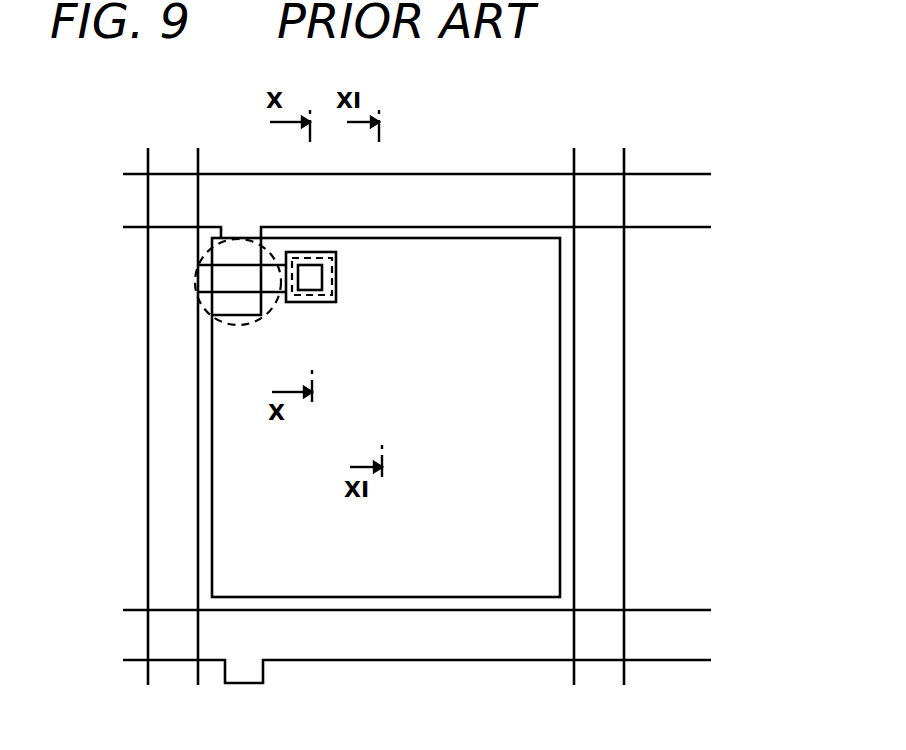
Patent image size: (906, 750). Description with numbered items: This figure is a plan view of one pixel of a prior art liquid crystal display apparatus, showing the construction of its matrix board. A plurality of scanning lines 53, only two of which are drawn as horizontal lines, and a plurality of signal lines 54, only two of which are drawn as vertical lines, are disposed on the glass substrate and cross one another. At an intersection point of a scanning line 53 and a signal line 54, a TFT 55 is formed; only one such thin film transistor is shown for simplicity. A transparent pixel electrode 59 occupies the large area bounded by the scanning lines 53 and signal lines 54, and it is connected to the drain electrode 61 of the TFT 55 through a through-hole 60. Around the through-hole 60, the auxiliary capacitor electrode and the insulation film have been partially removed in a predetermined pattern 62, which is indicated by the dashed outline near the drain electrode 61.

The scanning line 53 is at (695, 202).
The signal line 54 is at (597, 158).
The TFT (thin film transistor) 55 is at (207, 326).
The pixel electrode 59 is at (562, 428).
The through-hole 60 is at (303, 292).
The drain electrode 61 is at (305, 252).
The predetermined pattern 62 is at (313, 307).